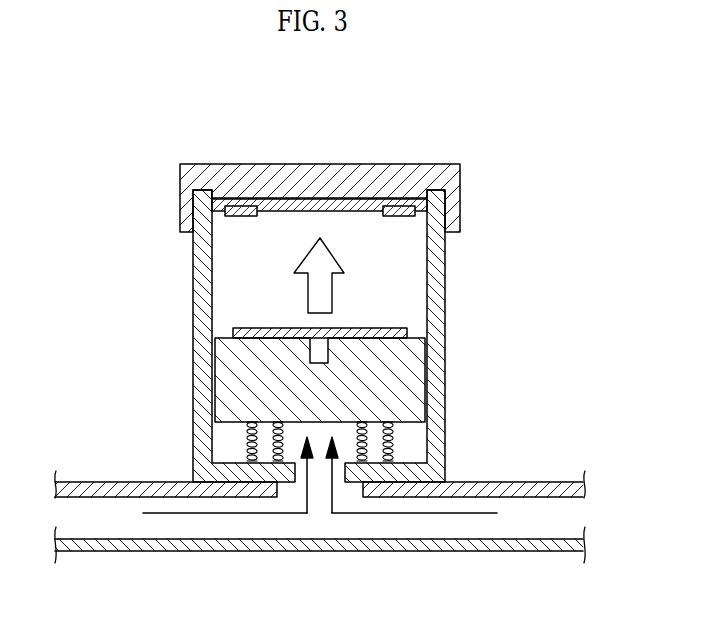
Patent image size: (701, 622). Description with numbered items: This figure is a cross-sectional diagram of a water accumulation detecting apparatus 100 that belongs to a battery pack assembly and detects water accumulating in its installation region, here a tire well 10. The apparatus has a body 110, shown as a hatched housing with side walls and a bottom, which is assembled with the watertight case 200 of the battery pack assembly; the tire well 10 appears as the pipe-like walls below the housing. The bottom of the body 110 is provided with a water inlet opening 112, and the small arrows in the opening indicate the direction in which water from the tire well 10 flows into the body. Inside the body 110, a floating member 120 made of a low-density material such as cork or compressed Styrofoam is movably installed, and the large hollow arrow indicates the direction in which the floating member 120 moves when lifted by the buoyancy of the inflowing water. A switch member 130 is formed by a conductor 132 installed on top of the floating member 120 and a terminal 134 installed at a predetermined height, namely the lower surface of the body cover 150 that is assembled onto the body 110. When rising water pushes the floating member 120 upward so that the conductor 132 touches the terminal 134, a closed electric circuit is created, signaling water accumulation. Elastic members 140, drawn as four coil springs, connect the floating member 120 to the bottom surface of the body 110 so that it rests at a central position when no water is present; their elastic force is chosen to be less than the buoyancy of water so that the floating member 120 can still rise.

The tire well 10 is at (137, 545).
The water accumulation detecting apparatus 100 is at (177, 282).
The body 110 is at (198, 336).
The water inlet opening 112 is at (328, 474).
The floating member 120 is at (412, 380).
The switch member 130 is at (327, 110).
The conductor 132 is at (278, 335).
The terminal 134 is at (242, 207).
The elastic member 140 is at (242, 458).
The body cover 150 is at (383, 170).
The watertight case 200 is at (123, 485).